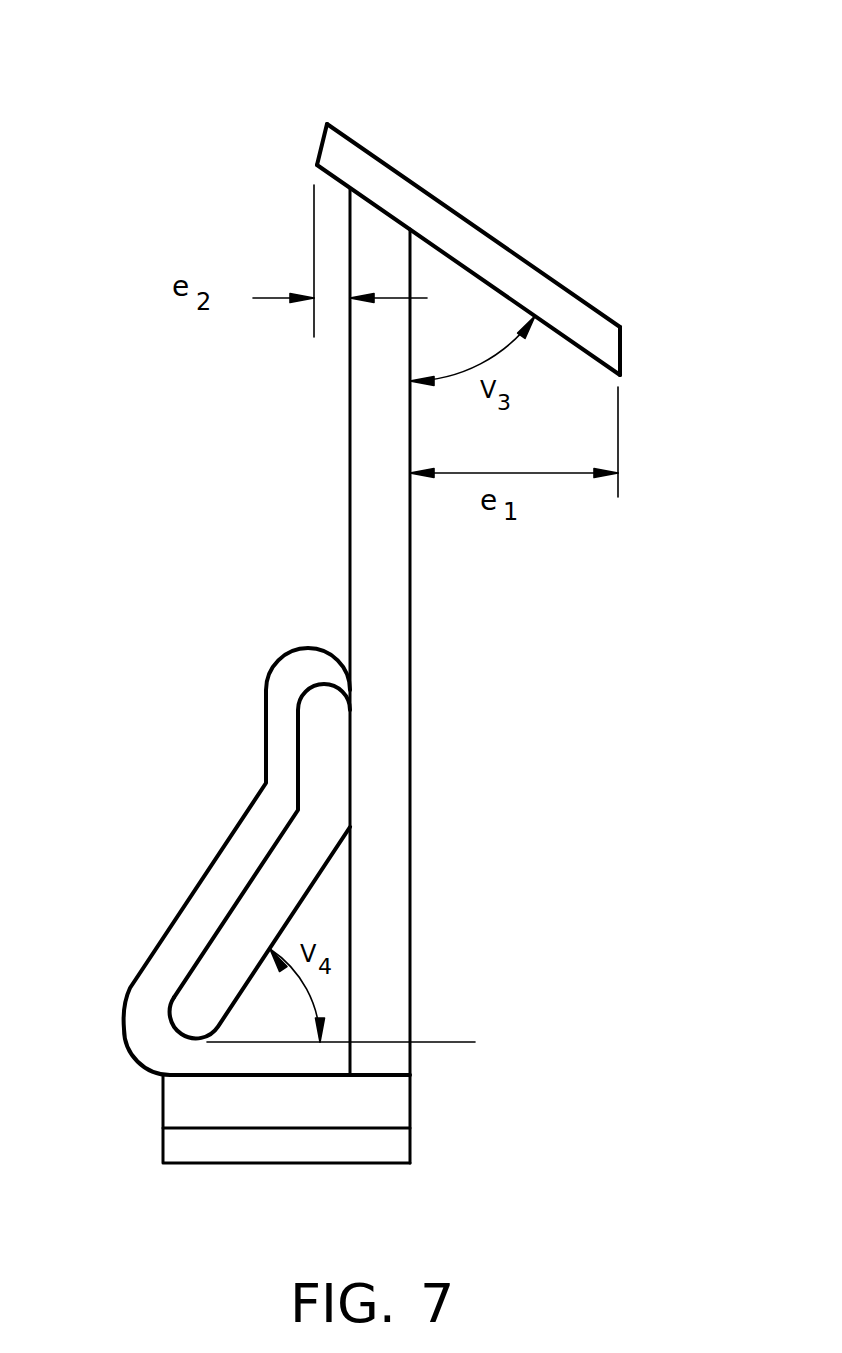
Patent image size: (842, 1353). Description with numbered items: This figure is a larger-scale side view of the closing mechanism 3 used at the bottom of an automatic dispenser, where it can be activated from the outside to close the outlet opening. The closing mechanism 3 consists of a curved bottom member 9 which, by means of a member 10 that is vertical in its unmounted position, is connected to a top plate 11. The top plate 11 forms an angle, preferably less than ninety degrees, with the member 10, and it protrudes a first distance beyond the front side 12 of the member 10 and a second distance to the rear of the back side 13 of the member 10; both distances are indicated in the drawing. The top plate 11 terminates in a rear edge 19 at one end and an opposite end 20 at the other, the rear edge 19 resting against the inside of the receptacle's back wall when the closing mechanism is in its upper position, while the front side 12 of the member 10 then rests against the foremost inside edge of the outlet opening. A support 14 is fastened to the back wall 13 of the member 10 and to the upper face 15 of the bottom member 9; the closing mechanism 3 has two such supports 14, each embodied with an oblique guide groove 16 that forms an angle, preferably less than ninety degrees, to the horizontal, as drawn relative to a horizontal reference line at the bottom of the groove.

The closing mechanism 3 is at (419, 150).
The curved bottom member 9 is at (212, 1143).
The vertical member 10 is at (369, 675).
The top plate 11 is at (531, 258).
The front side of the member 12 is at (412, 660).
The back side of the member 13 is at (350, 453).
The support 14 is at (133, 1003).
The upper face of the bottom member 15 is at (213, 1077).
The oblique guide groove 16 is at (238, 927).
The rear edge of the top plate 19 is at (325, 126).
The lower end of bar 20 is at (623, 351).